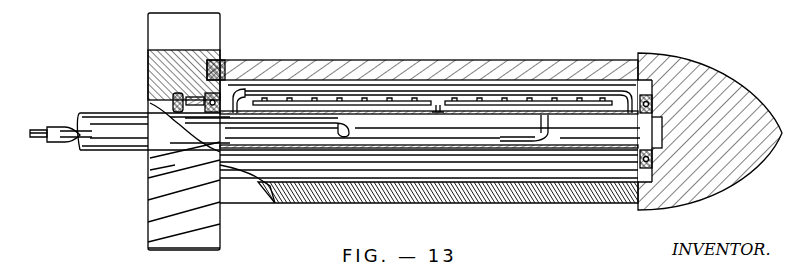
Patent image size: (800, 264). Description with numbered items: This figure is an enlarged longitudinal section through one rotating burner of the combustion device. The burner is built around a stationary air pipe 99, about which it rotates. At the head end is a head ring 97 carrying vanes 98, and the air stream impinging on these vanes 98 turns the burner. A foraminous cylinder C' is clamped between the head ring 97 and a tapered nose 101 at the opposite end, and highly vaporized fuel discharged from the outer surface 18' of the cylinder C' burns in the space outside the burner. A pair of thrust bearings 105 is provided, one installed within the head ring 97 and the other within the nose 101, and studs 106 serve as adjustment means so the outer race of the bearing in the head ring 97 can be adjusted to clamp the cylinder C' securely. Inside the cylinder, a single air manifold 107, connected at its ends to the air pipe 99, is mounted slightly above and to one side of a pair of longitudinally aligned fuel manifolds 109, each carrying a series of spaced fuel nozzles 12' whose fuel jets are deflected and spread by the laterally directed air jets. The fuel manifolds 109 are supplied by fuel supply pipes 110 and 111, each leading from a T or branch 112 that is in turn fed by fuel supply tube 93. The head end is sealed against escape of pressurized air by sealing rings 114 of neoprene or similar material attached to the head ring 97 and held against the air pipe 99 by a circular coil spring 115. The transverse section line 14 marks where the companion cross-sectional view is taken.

The fuel supply tube 93 is at (43, 140).
The head ring 97 is at (158, 66).
The vanes 98 is at (160, 28).
The air pipe 99 is at (110, 136).
The tapered nose 101 is at (736, 80).
The thrust bearings 105 is at (222, 72).
The studs 106 is at (176, 95).
The air manifold 107 is at (488, 92).
The fuel manifolds 109 is at (402, 108).
The fuel supply pipe 110 is at (67, 124).
The fuel supply pipe 111 is at (66, 137).
The T or branch 112 is at (60, 125).
The sealing rings 114 is at (178, 107).
The circular coil spring 115 is at (182, 150).
The section line 14 is at (317, 60).
The outer surface of cylinder 18' is at (422, 118).
The foraminous cylinder C' is at (439, 45).
The fuel nozzles 12' is at (404, 119).